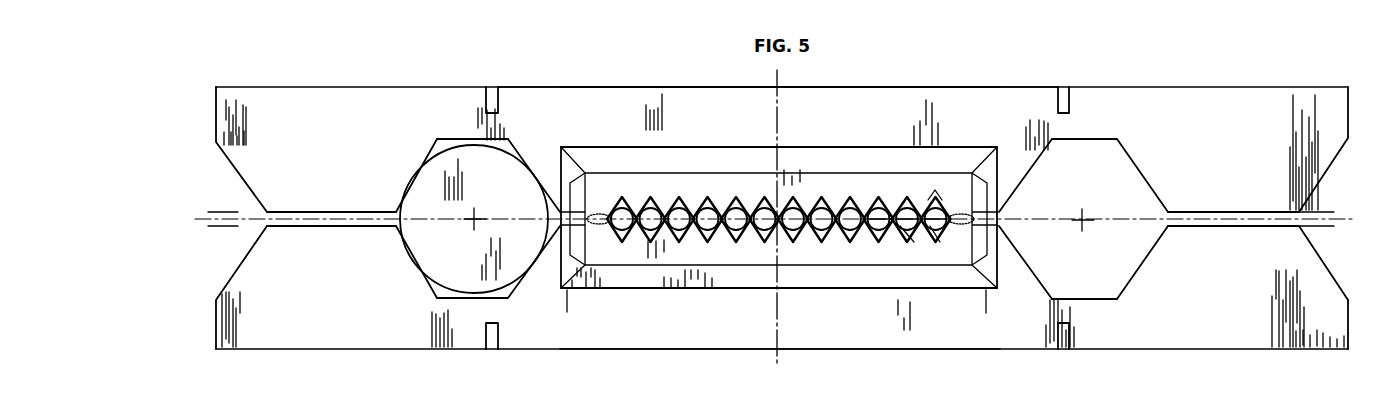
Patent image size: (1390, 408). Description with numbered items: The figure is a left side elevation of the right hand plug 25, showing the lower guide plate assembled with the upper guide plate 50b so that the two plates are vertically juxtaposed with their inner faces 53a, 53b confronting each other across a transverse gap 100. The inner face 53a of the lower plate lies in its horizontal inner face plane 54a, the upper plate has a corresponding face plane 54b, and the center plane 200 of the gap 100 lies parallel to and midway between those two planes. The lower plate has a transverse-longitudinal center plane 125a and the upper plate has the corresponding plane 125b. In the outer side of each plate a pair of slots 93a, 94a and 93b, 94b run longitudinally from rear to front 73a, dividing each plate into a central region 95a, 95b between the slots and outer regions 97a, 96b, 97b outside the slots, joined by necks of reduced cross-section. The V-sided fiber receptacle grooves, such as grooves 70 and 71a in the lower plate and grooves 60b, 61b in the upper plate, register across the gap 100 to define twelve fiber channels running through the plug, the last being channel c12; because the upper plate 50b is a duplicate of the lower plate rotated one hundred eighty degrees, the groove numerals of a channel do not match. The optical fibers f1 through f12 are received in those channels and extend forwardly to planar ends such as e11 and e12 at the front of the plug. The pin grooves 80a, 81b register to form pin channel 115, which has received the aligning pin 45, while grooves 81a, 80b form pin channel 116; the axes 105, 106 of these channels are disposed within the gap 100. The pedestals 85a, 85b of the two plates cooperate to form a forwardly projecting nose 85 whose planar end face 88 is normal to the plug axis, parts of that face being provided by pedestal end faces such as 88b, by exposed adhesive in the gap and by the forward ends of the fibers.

The plug 25 is at (209, 329).
The outer region of upper plate 97b is at (281, 102).
The outer region of lower plate 97a is at (1222, 360).
The outer region of upper plate 96b is at (1274, 92).
The inner face plane of upper plate 54b is at (242, 206).
The inner face plane of lower plate 54a is at (242, 230).
The center plane of gap 200 is at (200, 219).
The inner face of upper plate 53b is at (323, 208).
The inner face of lower plate 53a is at (322, 232).
The front of lower plate 73a is at (1318, 284).
The pin channel 115 is at (397, 204).
The pin channel 116 is at (1132, 202).
The pin groove of upper plate 81b is at (471, 124).
The pin groove of lower plate 81a is at (1148, 262).
The pin groove of lower plate 80a is at (434, 296).
The pin groove of upper plate 80b is at (1132, 166).
The aligning pin 45 is at (402, 250).
The longitudinal axis of pin channel 115 105 is at (470, 224).
The longitudinal axis of pin channel 116 106 is at (1078, 226).
The nose 85 is at (568, 243).
The pedestal of upper plate 85b is at (791, 148).
The pedestal of lower plate 85a is at (805, 288).
The end face of nose 88 is at (791, 245).
The end face of upper pedestal 88b is at (835, 172).
The optical fiber f1 is at (625, 236).
The optical fiber f12 is at (934, 232).
The fiber receptacle groove of upper plate 61b is at (880, 196).
The fiber receptacle groove of upper plate 60b is at (936, 200).
The fiber receptacle channel c12 is at (934, 202).
The fiber end e11 is at (900, 234).
The fiber end e12 is at (920, 244).
The fiber receptacle groove 70 is at (907, 228).
The fiber receptacle groove of lower plate 71a is at (934, 240).
The transverse-longitudinal center plane of upper plate 125b is at (781, 72).
The transverse-longitudinal center plane of lower plate 125a is at (777, 360).
The upper guide plate 50b is at (756, 117).
The central region of upper plate 95b is at (882, 94).
The central region of lower plate 95a is at (824, 338).
The slot of upper plate 93b is at (492, 92).
The slot of lower plate 93a is at (1063, 338).
The slot of upper plate 94b is at (1063, 94).
The slot of lower plate 94a is at (492, 338).
The transverse gap 100 is at (1230, 226).